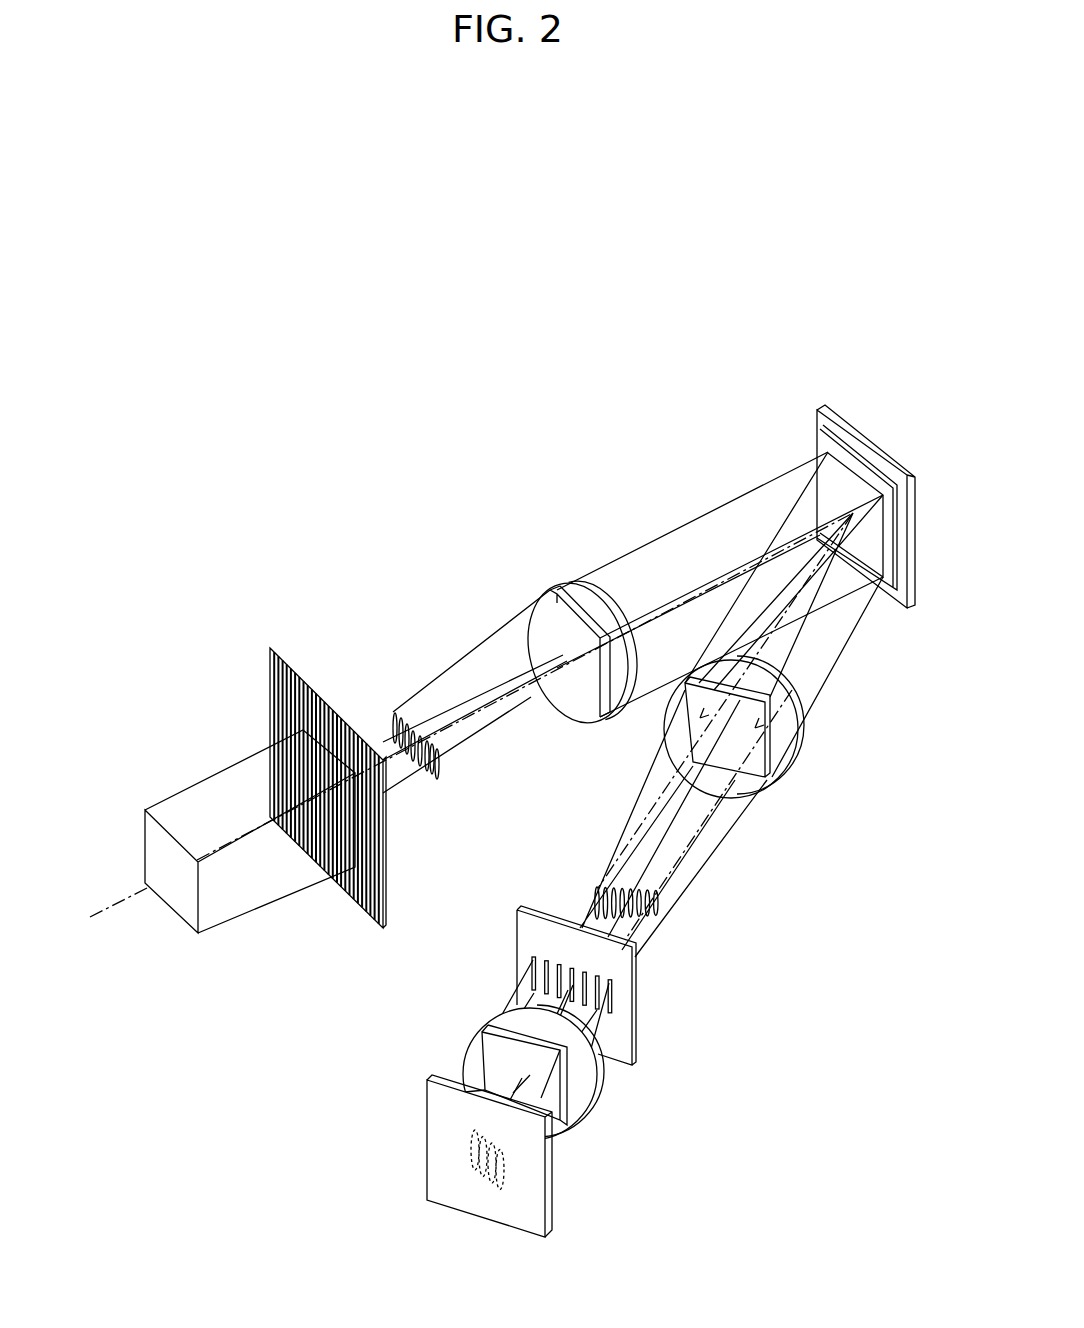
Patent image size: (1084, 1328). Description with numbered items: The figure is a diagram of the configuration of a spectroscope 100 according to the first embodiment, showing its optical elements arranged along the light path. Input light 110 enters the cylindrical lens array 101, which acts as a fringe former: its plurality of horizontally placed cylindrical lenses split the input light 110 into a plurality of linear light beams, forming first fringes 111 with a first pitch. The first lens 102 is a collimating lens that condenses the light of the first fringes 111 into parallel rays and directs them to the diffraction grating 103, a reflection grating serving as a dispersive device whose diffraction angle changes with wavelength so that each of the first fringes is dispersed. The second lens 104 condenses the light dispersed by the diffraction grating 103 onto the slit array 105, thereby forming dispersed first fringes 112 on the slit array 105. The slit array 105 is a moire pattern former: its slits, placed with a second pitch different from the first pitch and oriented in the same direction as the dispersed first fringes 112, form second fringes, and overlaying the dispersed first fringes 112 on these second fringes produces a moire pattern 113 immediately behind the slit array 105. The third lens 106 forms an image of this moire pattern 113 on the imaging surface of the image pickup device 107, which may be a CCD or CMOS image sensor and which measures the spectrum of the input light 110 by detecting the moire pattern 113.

The spectroscope 100 is at (668, 384).
The cylindrical lens array 101 is at (268, 702).
The first lens 102 is at (550, 592).
The diffraction grating 103 is at (826, 440).
The second lens 104 is at (772, 785).
The slit array 105 is at (518, 932).
The third lens 106 is at (598, 1092).
The image pickup device 107 is at (426, 1157).
The input light 110 is at (253, 900).
The first fringes 111 is at (396, 716).
The dispersed first fringes 112 is at (660, 900).
The moire pattern 113 is at (504, 1160).